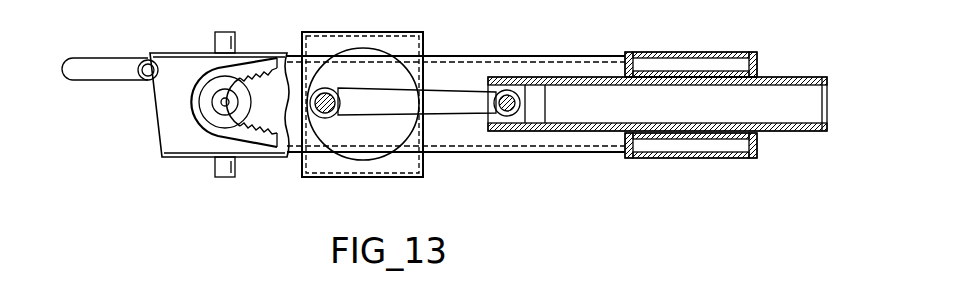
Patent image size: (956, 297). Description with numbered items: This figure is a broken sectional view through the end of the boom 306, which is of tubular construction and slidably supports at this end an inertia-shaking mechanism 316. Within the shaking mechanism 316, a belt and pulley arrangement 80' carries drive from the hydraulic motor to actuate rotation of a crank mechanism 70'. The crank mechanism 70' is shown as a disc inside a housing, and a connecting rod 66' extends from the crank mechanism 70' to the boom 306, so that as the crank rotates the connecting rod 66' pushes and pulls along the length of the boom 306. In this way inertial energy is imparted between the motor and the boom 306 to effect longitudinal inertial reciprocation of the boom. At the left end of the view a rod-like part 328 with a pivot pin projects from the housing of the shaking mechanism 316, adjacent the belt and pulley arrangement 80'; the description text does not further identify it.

The inertia-shaking mechanism 316 is at (496, 36).
The handle 328 is at (95, 82).
The belt and pulley arrangement 80' is at (234, 131).
The crank mechanism 70' is at (363, 104).
The connecting rod 66' is at (415, 138).
The boom 306 is at (787, 133).